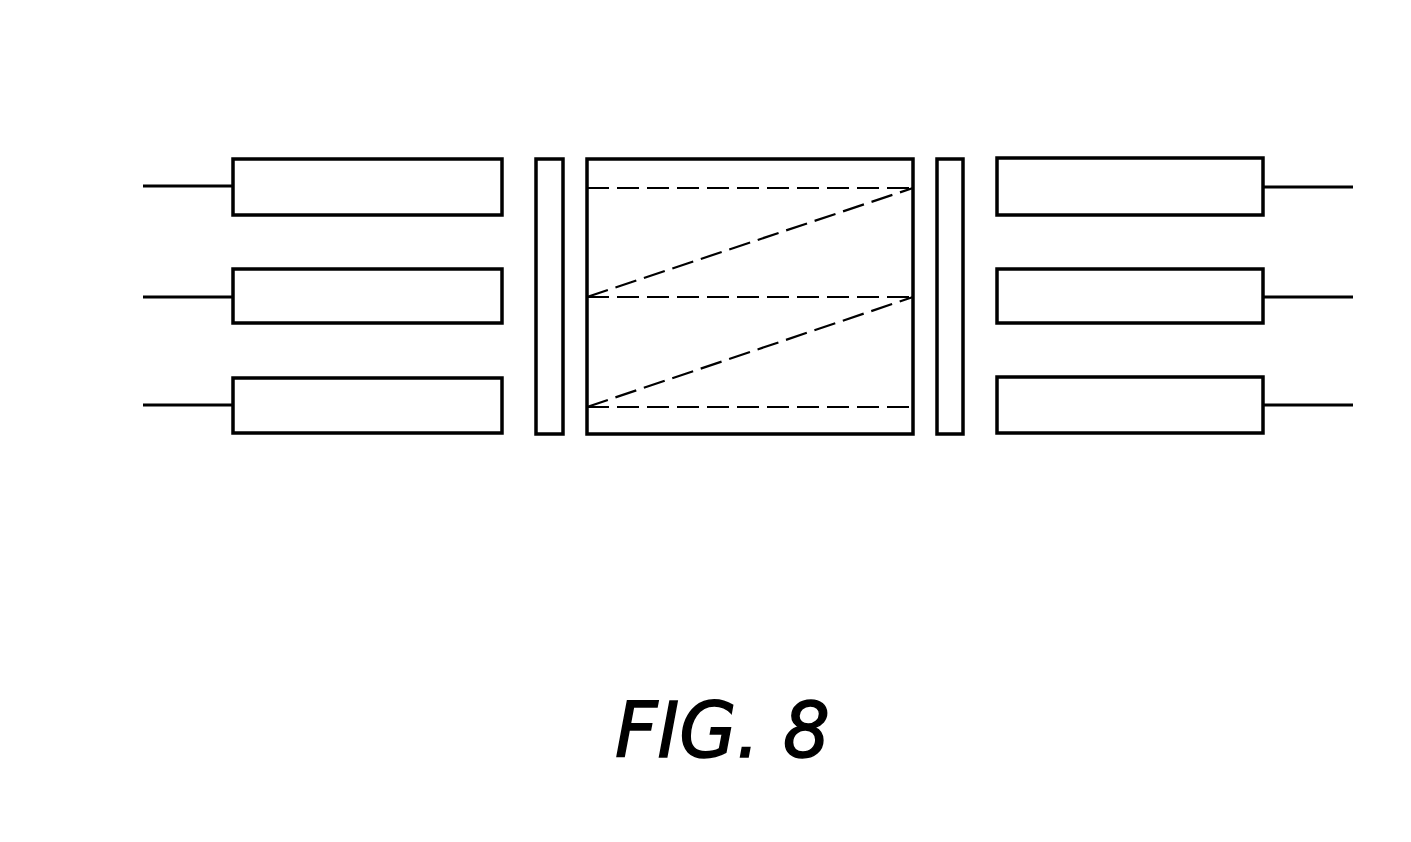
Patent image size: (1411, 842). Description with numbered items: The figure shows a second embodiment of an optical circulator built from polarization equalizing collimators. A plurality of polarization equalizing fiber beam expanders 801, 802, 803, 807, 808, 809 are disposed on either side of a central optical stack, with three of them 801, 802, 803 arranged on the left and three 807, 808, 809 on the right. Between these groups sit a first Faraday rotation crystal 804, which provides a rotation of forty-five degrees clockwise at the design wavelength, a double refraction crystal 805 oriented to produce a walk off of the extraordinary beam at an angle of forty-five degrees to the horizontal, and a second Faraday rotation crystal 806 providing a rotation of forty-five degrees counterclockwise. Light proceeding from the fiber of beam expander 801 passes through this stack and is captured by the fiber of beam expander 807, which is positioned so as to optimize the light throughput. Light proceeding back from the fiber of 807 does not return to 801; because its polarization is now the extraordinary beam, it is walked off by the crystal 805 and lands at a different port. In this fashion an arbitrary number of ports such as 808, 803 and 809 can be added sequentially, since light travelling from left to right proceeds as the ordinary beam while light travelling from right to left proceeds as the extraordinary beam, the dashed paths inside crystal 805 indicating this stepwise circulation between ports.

The polarization equalizing fiber beam expander 801 is at (280, 165).
The polarization equalizing fiber beam expander 802 is at (272, 278).
The polarization equalizing fiber beam expander 803 is at (292, 420).
The first Faraday rotation crystal 804 is at (549, 427).
The double refraction crystal 805 is at (753, 435).
The second Faraday rotation crystal 806 is at (948, 427).
The polarization equalizing fiber beam expander 807 is at (1198, 168).
The polarization equalizing fiber beam expander 808 is at (1230, 310).
The polarization equalizing fiber beam expander 809 is at (1165, 422).